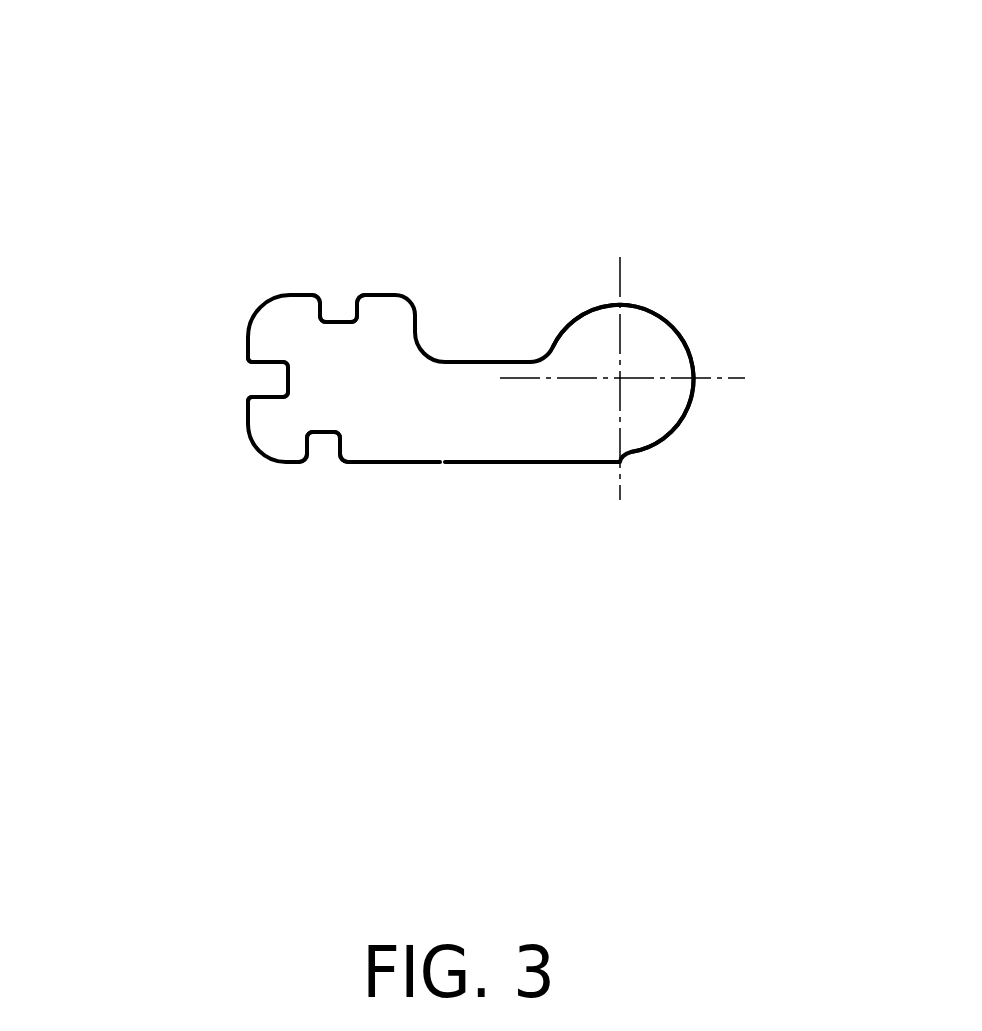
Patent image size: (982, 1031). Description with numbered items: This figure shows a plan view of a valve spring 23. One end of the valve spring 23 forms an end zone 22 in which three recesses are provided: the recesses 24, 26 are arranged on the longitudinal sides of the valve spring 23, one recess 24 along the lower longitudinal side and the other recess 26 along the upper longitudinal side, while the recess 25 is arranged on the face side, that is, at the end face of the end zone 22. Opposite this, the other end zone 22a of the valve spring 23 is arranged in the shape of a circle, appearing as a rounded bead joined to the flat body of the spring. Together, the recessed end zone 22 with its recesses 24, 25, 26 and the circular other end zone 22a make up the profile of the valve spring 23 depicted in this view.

The end zone 22 is at (305, 259).
The other end zone 22a is at (686, 460).
The valve spring 23 is at (468, 399).
The recess 24 is at (323, 443).
The recess 25 is at (272, 378).
The recess 26 is at (338, 311).